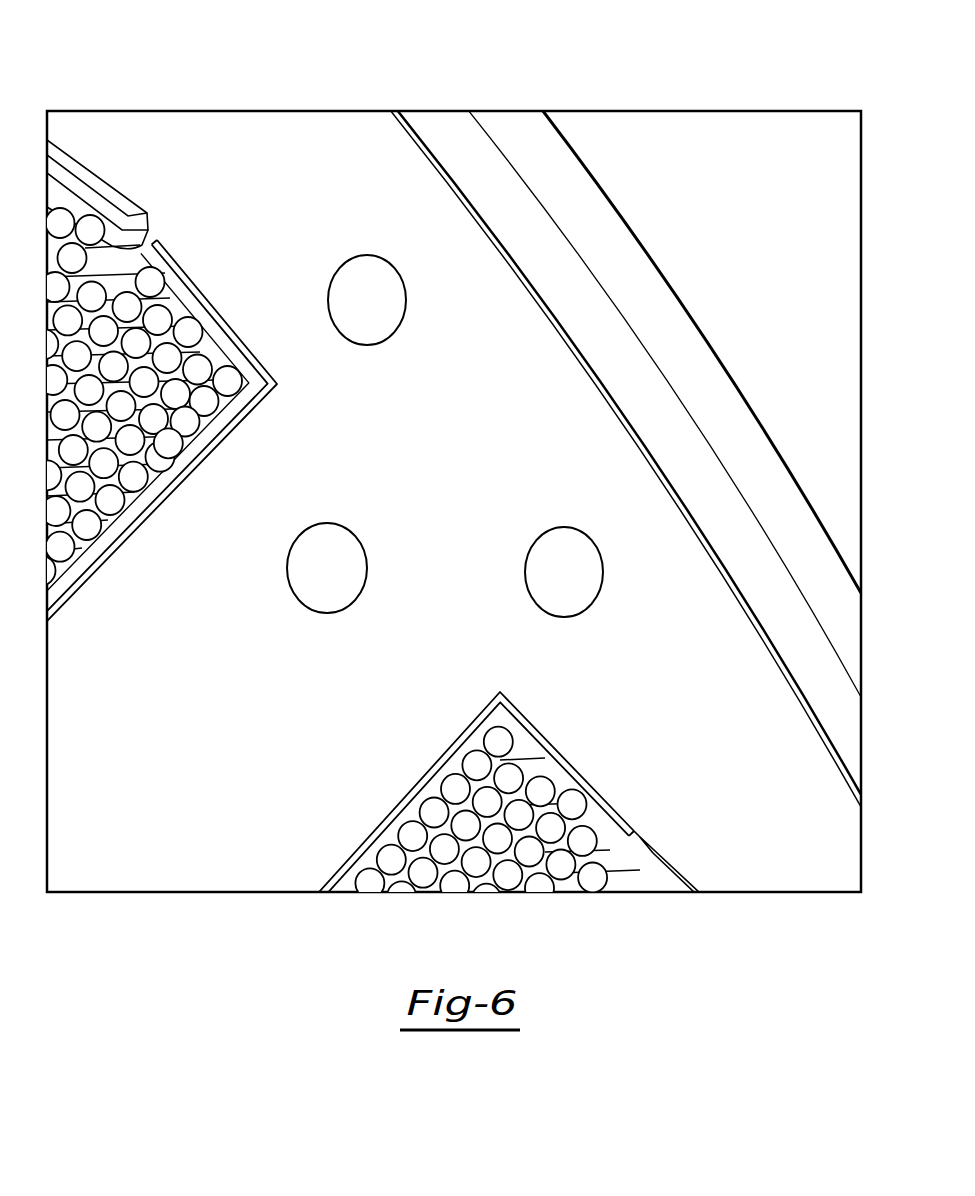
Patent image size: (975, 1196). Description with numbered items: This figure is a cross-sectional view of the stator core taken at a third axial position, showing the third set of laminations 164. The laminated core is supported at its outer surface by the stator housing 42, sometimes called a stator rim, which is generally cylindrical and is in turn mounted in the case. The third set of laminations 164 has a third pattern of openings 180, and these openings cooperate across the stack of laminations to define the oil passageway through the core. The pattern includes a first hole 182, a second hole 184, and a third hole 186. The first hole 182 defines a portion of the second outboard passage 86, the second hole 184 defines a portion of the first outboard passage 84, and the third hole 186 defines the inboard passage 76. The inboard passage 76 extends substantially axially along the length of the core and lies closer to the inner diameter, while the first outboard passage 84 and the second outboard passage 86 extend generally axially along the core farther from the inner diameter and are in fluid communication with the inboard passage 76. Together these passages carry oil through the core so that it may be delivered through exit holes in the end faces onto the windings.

The third set of laminations 164 is at (170, 133).
The stator housing 42 is at (530, 138).
The third pattern of openings 180 is at (478, 333).
The first hole 182 is at (362, 256).
The third hole 186 is at (317, 612).
The second hole 184 is at (572, 619).
The second outboard passage 86 is at (380, 318).
The inboard passage 76 is at (340, 586).
The first outboard passage 84 is at (577, 590).